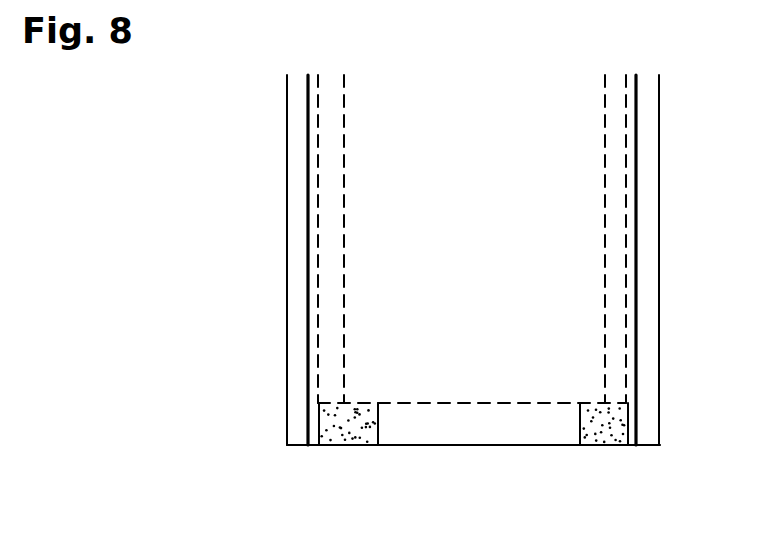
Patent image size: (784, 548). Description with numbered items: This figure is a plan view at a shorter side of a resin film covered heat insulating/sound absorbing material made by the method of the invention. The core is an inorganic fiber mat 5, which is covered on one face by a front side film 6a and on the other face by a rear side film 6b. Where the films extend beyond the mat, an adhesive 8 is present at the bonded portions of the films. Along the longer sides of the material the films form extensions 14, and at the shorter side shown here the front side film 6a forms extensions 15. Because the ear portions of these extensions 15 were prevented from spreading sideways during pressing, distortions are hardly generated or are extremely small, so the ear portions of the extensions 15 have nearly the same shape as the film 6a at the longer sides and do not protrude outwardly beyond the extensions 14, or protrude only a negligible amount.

The inorganic fiber mat 5 is at (628, 173).
The front side film 6a is at (637, 241).
The rear side film 6b is at (660, 358).
The extension 14 is at (647, 292).
The extension 15 is at (481, 428).
The adhesive 8 is at (613, 430).